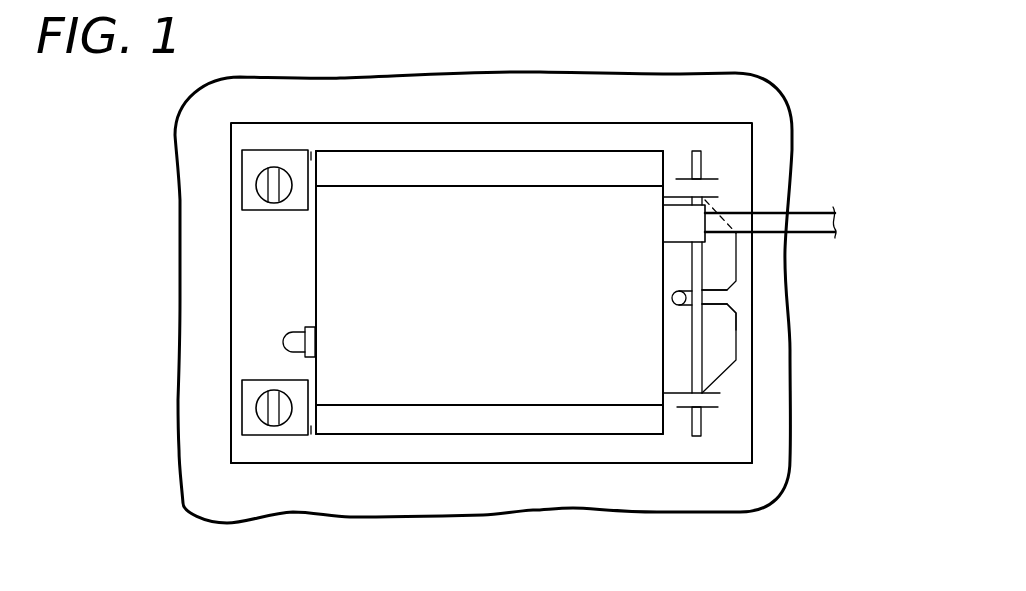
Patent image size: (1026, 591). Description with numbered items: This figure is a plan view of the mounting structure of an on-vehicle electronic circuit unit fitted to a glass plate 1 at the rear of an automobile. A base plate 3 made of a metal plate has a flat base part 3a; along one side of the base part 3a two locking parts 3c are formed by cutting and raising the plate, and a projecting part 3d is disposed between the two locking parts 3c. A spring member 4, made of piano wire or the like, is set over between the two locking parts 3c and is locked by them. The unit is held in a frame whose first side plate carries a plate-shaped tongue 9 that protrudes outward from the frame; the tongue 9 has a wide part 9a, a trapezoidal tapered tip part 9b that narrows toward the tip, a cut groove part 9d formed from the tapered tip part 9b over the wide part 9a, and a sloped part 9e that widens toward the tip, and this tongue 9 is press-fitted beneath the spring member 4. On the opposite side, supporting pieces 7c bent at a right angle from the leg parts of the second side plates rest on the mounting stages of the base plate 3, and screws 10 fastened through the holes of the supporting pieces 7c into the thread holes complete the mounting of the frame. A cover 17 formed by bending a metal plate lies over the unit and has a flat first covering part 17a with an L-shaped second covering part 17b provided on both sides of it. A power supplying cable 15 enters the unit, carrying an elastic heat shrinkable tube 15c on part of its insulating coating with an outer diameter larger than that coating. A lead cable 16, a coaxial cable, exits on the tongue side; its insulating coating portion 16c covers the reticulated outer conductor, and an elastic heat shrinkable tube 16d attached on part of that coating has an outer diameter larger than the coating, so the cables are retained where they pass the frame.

The glass plate 1 is at (597, 495).
The base plate 3 is at (486, 463).
The base part 3a is at (548, 450).
The locking parts 3c is at (703, 188).
The projecting part 3d is at (667, 297).
The spring member 4 is at (695, 350).
The supporting pieces 7c is at (257, 158).
The tongue 9 is at (743, 268).
The wide part 9a is at (672, 358).
The tapered tip part 9b is at (718, 333).
The cut groove part 9d is at (717, 292).
The sloped part 9e is at (732, 307).
The screws 10 is at (260, 183).
The power supplying cable 15 is at (284, 336).
The heat shrinkable tube 15c is at (313, 325).
The lead cable 16 is at (806, 213).
The insulating coating portion 16c is at (827, 223).
The heat shrinkable tube 16d is at (675, 218).
The cover 17 is at (500, 152).
The first covering part 17a is at (465, 212).
The second covering part 17b is at (394, 158).